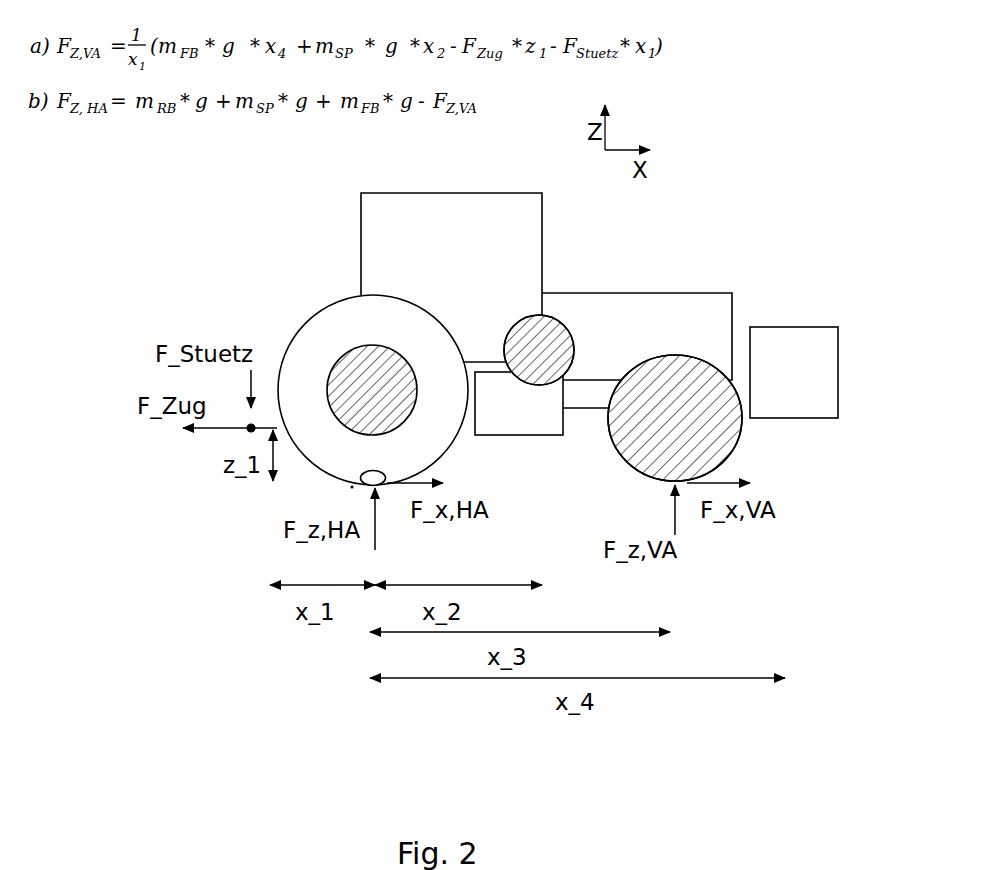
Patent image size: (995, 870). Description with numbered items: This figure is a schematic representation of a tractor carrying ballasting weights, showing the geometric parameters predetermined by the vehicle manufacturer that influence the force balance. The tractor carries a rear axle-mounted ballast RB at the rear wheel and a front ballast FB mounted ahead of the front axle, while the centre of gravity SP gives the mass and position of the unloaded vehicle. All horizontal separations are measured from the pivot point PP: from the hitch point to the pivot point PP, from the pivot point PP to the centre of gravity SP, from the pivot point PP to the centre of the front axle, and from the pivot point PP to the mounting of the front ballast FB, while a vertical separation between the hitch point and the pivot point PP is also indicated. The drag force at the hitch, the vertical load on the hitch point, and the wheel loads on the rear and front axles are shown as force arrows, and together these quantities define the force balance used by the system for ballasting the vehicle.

The rear axle-mounted ballast RB is at (335, 362).
The centre of gravity SP is at (558, 327).
The front ballast FB is at (778, 327).
The pivot point PP is at (350, 488).